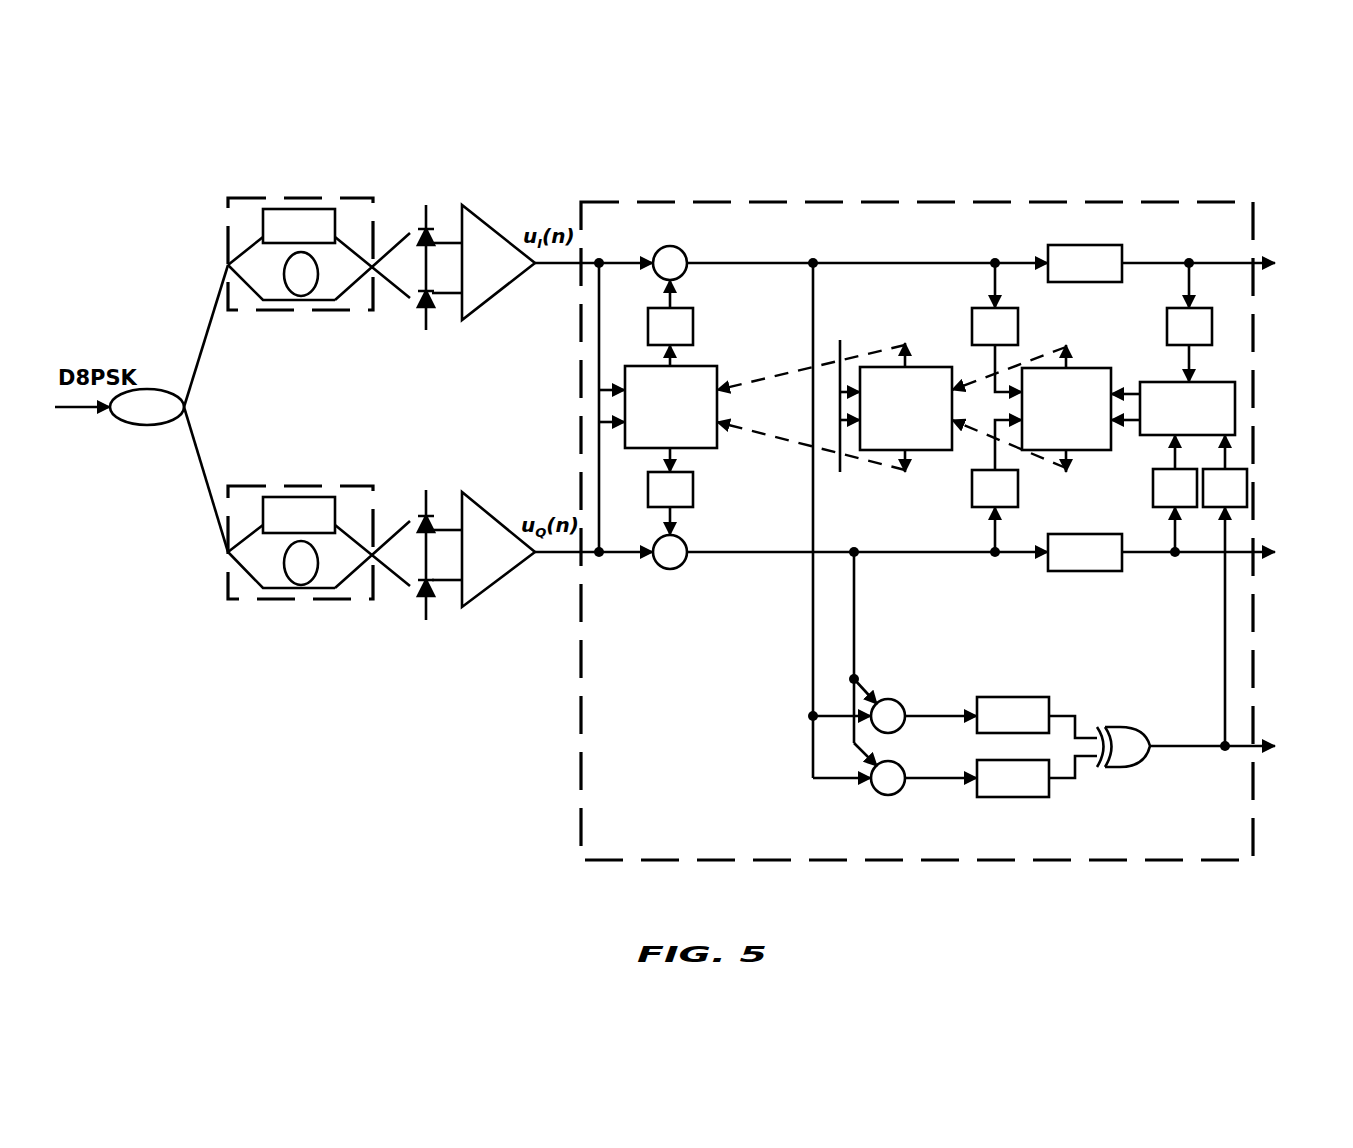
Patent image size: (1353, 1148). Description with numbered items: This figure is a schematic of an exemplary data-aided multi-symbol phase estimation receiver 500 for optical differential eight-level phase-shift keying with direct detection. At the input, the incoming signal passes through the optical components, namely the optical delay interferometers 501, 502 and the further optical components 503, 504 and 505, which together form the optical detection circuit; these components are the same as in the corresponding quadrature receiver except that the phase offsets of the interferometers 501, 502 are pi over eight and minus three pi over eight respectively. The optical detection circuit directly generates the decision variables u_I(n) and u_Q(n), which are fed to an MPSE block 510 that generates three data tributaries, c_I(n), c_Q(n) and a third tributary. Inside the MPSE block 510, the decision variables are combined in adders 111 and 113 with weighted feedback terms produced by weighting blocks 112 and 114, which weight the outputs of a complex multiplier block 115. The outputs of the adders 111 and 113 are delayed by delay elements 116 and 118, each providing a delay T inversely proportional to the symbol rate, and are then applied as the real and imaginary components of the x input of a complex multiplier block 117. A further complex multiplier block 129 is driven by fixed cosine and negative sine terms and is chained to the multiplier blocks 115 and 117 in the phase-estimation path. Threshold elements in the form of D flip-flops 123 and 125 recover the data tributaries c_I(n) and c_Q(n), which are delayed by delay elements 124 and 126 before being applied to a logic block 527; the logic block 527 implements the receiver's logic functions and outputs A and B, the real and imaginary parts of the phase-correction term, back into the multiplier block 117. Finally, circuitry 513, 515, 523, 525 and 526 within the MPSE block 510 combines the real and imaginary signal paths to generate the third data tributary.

The data-aided MSPE receiver 500 is at (708, 74).
The optical delay interferometer 501 is at (318, 198).
The optical delay interferometer 502 is at (318, 486).
The optical component 503 is at (476, 208).
The optical component 504 is at (476, 495).
The optical component 505 is at (145, 425).
The MPSE block 510 is at (820, 203).
The adder 111 is at (684, 252).
The weighting block 112 is at (693, 326).
The adder 113 is at (683, 564).
The weighting block 114 is at (693, 490).
The complex multiplier block 115 is at (717, 374).
The delay element 116 is at (975, 310).
The complex multiplier block 117 is at (1080, 368).
The delay element 118 is at (972, 489).
The threshold element (D-FF) 123 is at (1070, 246).
The delay element 124 is at (1212, 328).
The threshold element (D-FF) 125 is at (1072, 571).
The delay element 126 is at (1153, 486).
The complex multiplier block 129 is at (922, 364).
The third-tributary circuitry 513 is at (888, 700).
The third-tributary circuitry 515 is at (880, 795).
The third-tributary circuitry 523 is at (1022, 697).
The third-tributary circuitry 525 is at (1005, 797).
The third-tributary circuitry 526 is at (1253, 489).
The logic block 527 is at (1235, 405).